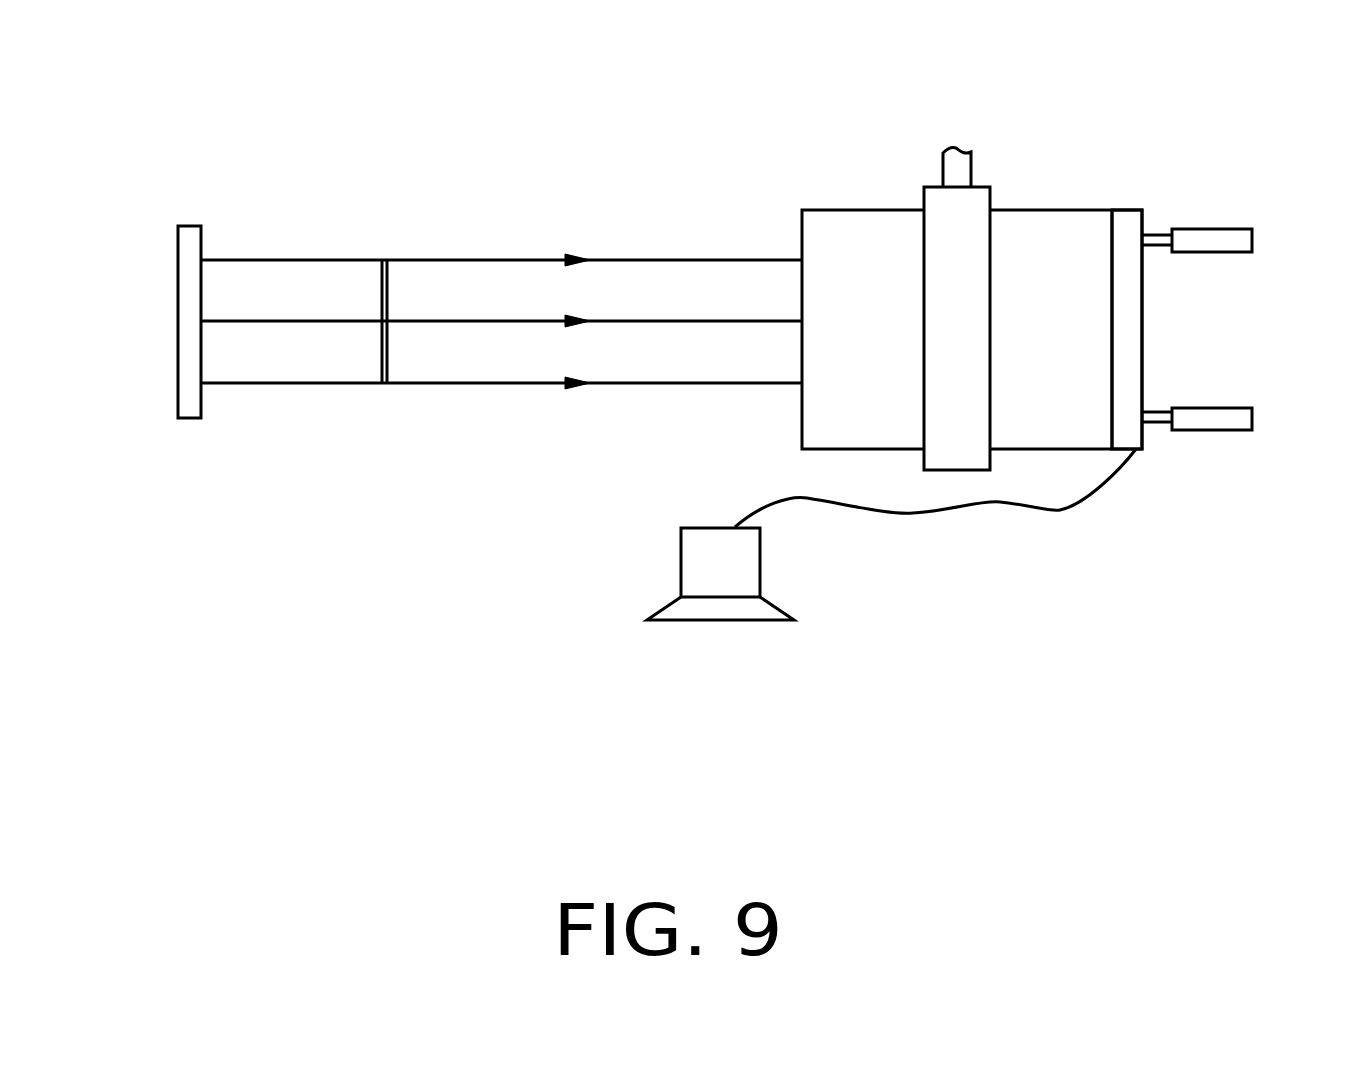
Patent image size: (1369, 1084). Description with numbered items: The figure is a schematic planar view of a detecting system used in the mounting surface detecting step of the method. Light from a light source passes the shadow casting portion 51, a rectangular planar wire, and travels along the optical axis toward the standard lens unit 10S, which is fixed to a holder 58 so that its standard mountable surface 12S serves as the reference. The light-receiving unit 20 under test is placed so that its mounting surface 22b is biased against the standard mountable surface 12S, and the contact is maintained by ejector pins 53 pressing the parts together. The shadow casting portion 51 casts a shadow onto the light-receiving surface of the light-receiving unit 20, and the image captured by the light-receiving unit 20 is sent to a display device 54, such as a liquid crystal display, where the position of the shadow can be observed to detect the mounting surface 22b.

The ejector pins 53 is at (189, 247).
The shadow casting portion 51 is at (384, 258).
The standard lens unit 10S is at (867, 237).
The holder 58 is at (948, 210).
The light-receiving unit 20 is at (1126, 223).
The mounting surface 22b is at (1110, 258).
The standard mountable surface 12S is at (1113, 347).
The display device 54 is at (745, 564).